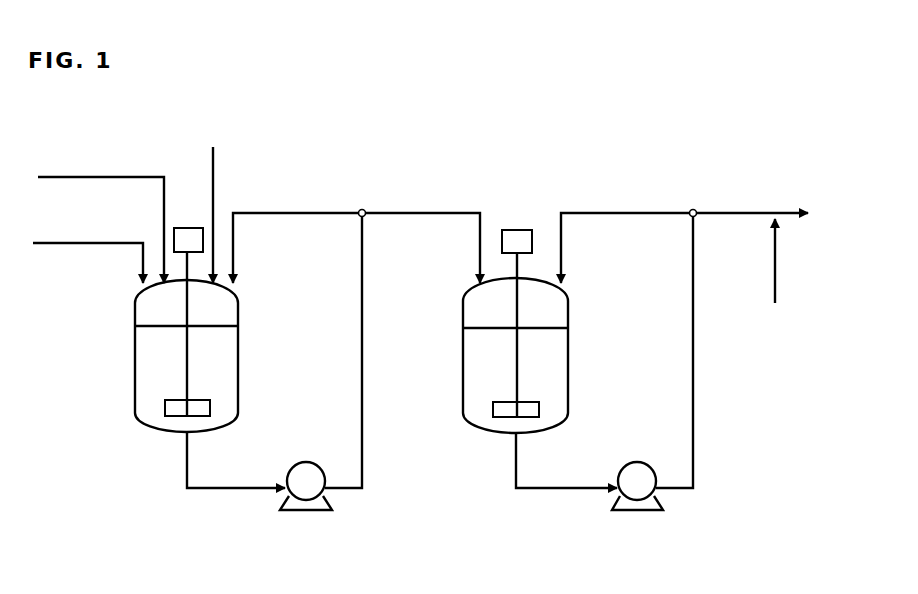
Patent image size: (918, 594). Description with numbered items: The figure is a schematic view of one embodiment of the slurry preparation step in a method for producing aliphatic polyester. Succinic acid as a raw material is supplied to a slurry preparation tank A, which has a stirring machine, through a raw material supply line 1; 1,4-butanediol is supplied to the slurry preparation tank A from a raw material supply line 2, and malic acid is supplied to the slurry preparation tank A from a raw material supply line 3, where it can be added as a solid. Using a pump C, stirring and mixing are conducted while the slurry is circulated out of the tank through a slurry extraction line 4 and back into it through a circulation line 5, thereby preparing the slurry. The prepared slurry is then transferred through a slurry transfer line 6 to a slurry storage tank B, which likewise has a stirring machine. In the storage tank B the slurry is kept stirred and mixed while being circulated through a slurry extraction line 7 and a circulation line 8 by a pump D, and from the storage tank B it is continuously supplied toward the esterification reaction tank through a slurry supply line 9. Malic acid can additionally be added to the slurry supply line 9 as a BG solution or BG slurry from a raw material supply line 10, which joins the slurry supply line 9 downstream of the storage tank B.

The raw material supply line 1 is at (92, 236).
The raw material supply line 2 is at (120, 166).
The raw material supply line 3 is at (230, 175).
The slurry extraction line 4 is at (213, 492).
The circulation line 5 is at (304, 213).
The slurry transfer line 6 is at (418, 213).
The slurry extraction line 7 is at (544, 492).
The circulation line 8 is at (625, 213).
The slurry supply line 9 is at (748, 213).
The raw material supply line 10 is at (785, 268).
The slurry preparation tank A is at (124, 357).
The slurry storage tank B is at (457, 357).
The pump C is at (309, 516).
The pump D is at (639, 516).